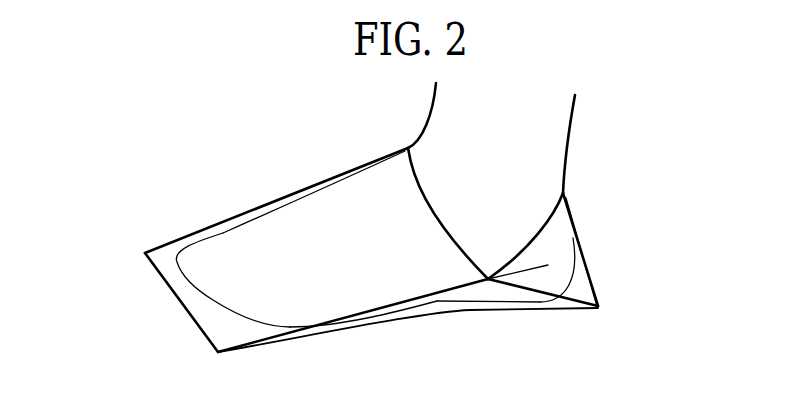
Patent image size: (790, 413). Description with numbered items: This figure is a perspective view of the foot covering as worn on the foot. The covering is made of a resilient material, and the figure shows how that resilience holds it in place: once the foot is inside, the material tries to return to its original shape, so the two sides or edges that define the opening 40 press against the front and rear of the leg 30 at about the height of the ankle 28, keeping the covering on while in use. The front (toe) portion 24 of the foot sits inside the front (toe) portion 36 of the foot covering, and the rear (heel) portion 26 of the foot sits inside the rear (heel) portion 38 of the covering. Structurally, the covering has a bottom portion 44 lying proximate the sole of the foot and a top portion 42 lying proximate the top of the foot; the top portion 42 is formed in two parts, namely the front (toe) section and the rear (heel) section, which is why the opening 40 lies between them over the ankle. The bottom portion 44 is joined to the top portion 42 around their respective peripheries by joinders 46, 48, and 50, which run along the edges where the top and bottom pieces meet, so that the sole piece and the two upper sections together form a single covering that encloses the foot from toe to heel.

The front (toe) portion of foot 24 is at (255, 253).
The rear (heel) portion of foot 26 is at (557, 247).
The ankle 28 is at (488, 188).
The leg 30 is at (560, 115).
The front (toe) portion of foot covering 36 is at (178, 277).
The rear (heel) portion of foot covering 38 is at (582, 283).
The opening 40 is at (415, 180).
The top portion 42 is at (312, 217).
The bottom portion 44 is at (383, 323).
The joinder 46 is at (292, 335).
The joinder 48 is at (192, 322).
The joinder 50 is at (598, 307).